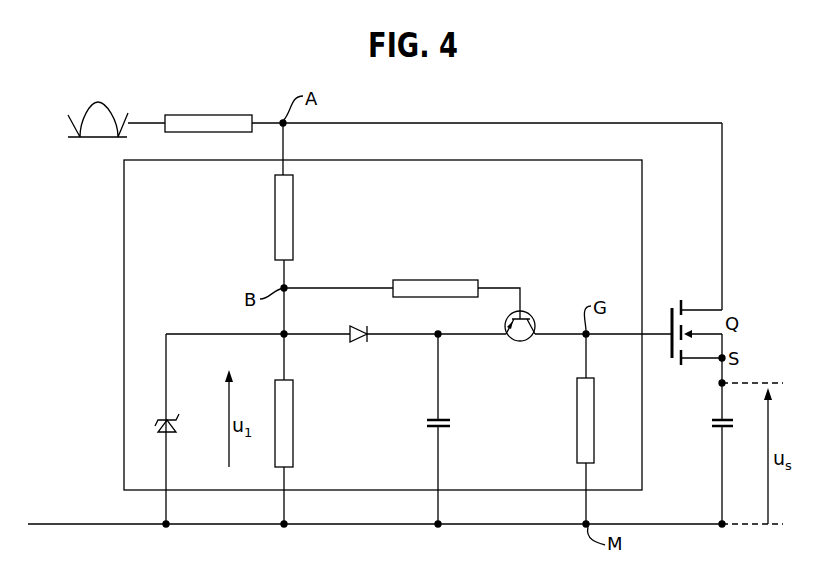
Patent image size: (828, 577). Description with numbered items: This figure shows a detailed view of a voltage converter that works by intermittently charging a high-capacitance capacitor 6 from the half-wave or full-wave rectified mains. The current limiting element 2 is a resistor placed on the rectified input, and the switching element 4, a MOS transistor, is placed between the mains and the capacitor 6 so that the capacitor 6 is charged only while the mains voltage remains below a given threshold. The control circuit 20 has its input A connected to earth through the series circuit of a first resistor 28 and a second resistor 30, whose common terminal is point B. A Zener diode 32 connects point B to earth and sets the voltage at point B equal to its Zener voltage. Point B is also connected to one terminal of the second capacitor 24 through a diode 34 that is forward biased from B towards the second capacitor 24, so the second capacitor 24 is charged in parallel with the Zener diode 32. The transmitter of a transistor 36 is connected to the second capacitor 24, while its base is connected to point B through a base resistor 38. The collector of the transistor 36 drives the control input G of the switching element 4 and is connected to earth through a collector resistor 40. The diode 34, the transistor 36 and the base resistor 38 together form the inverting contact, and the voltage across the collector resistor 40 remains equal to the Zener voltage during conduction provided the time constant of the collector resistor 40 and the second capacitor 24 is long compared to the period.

The current limiting element 2 is at (232, 115).
The switching element 4 is at (672, 312).
The capacitor 6 is at (714, 428).
The control circuit 20 is at (124, 282).
The second capacitor 24 is at (432, 428).
The resistor R2 28 is at (275, 213).
The resistor R4 30 is at (296, 455).
The Zener diode 32 is at (176, 424).
The diode 34 is at (358, 342).
The transistor 36 is at (510, 340).
The resistor R5 38 is at (465, 280).
The resistor R3 40 is at (577, 430).